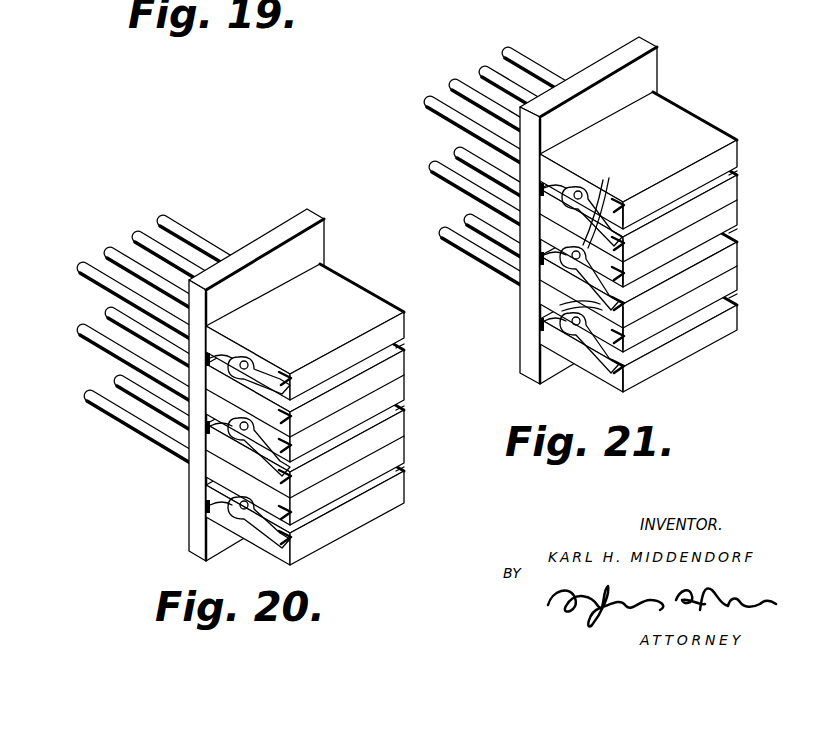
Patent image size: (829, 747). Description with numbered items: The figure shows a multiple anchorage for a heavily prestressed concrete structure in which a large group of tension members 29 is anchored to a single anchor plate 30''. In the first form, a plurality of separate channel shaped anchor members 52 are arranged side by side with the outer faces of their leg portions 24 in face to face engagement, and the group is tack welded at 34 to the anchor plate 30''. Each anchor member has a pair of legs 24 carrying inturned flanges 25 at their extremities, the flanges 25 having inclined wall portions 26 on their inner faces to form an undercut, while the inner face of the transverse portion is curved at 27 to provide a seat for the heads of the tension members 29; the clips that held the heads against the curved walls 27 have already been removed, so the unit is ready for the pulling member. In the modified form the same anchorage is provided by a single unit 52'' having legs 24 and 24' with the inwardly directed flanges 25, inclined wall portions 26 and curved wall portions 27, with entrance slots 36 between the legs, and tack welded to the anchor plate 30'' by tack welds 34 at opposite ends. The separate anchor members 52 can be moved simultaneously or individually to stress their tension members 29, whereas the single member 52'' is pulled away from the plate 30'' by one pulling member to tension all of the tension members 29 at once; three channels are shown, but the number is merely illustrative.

In FIG. 20, the legs 24 is at (266, 442).
In FIG. 21, the legs 24 is at (592, 266).
In FIG. 21, the leg 24' is at (548, 249).
In FIG. 21, the inturned flanges 25 is at (625, 214).
In FIG. 20, the inclined wall portions 26 is at (290, 376).
In FIG. 21, the inclined wall portions 26 is at (610, 207).
In FIG. 20, the curved wall portion 27 is at (238, 358).
In FIG. 21, the curved wall portion 27 is at (560, 178).
In FIG. 20, the tension members 29 is at (158, 222).
In FIG. 21, the tension members 29 is at (504, 56).
In FIG. 20, the anchor plate 30'' is at (256, 372).
In FIG. 21, the anchor plate 30'' is at (588, 195).
In FIG. 20, the tack weld 34 is at (214, 357).
In FIG. 21, the tack weld 34 is at (538, 252).
In FIG. 20, the entrance slots 36 is at (405, 345).
In FIG. 21, the entrance slots 36 is at (738, 169).
In FIG. 20, the anchor members 52 is at (277, 400).
In FIG. 21, the single unit anchor member 52'' is at (652, 233).